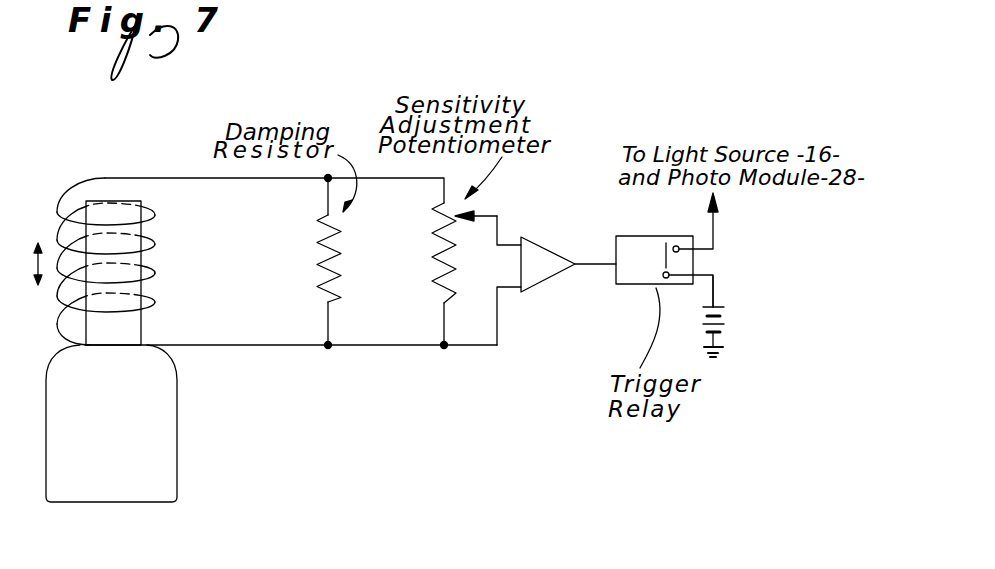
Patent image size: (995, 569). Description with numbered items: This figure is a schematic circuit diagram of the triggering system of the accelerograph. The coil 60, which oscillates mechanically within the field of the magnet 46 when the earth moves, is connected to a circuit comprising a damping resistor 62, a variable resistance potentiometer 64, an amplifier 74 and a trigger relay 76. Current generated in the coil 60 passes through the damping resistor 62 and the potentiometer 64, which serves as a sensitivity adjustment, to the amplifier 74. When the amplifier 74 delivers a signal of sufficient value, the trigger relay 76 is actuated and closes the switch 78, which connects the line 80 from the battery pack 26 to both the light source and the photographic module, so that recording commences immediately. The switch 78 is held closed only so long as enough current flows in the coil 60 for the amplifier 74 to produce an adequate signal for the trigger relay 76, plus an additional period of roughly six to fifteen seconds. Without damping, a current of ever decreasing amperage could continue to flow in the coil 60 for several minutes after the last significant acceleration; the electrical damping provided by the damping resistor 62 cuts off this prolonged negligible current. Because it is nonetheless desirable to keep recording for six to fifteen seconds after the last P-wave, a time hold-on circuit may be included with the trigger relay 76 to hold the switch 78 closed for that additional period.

The coil 60 is at (70, 190).
The magnet 46 is at (120, 309).
The damping resistor 62 is at (318, 256).
The variable resistance potentiometer 64 is at (433, 262).
The amplifier 74 is at (548, 259).
The trigger relay 76 is at (637, 237).
The switch 78 is at (657, 263).
The line 80 is at (713, 293).
The battery pack 26 is at (722, 318).